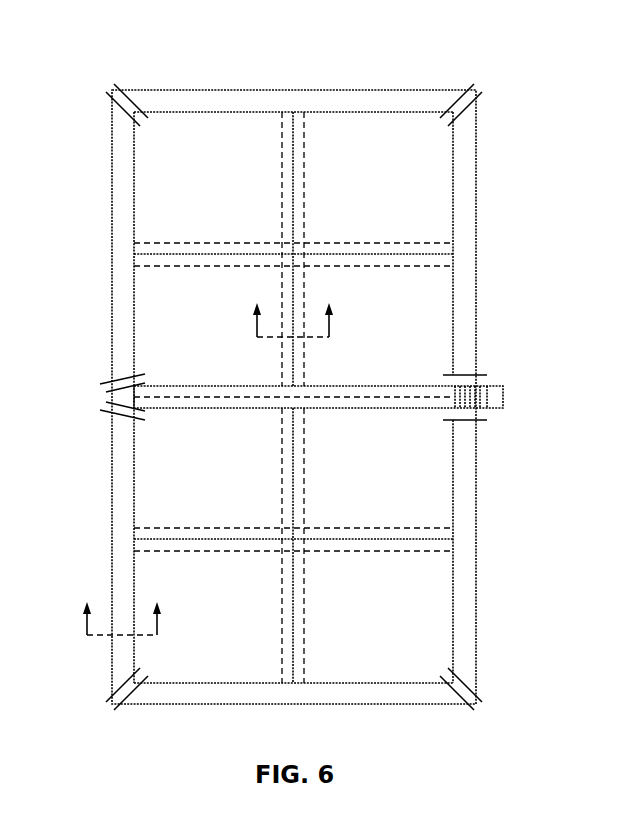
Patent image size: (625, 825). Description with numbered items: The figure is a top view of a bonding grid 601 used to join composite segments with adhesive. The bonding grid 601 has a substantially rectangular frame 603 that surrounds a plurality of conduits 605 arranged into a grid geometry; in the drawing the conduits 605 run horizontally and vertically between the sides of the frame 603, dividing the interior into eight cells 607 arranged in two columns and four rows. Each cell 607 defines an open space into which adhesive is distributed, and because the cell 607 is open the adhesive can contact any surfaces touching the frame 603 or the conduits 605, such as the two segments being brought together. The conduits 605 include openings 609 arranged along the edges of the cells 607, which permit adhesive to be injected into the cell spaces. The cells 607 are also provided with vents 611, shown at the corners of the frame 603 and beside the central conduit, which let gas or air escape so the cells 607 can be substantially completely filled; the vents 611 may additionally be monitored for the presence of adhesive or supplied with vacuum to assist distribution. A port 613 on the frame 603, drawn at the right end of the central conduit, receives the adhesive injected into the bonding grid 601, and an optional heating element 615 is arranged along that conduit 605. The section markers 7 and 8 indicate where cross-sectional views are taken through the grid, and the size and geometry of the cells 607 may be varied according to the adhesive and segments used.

The bonding grid 601 is at (130, 38).
The frame 603 is at (465, 181).
The conduits 605 is at (445, 252).
The cells 607 is at (190, 190).
The openings 609 is at (404, 553).
The vents 611 is at (110, 90).
The port 613 is at (495, 402).
The heating element 615 is at (388, 393).
The section line 7 is at (122, 605).
The section line 8 is at (294, 306).